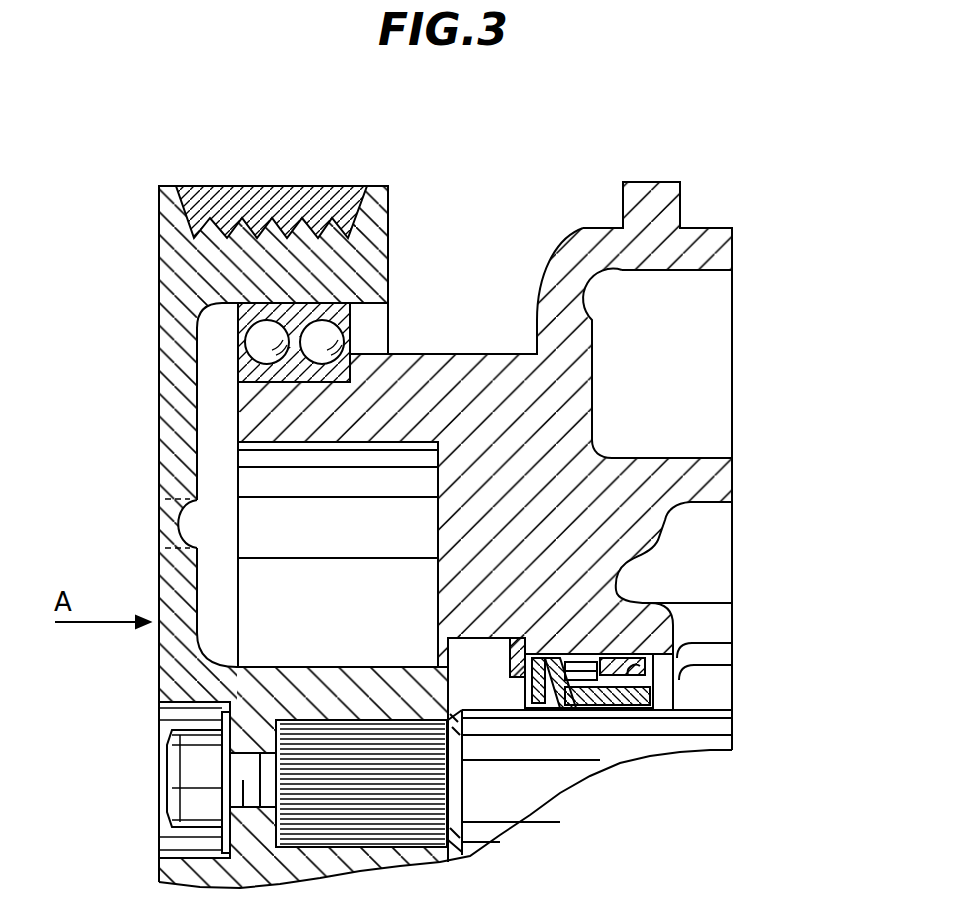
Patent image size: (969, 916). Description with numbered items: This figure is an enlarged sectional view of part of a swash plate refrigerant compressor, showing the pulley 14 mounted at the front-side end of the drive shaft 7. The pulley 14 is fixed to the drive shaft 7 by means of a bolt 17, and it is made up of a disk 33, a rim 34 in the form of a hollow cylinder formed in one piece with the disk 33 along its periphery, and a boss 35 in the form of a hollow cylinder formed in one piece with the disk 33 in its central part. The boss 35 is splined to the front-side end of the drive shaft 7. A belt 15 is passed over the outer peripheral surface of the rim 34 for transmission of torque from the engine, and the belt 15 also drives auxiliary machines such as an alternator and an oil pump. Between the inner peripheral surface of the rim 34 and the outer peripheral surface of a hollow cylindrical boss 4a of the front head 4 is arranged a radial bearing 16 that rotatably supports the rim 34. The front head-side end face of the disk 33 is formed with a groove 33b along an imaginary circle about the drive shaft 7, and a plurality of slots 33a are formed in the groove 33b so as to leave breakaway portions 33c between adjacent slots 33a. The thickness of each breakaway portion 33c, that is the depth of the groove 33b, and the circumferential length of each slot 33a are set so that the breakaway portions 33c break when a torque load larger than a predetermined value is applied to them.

The front head 4 is at (710, 245).
The boss 4a is at (427, 362).
The drive shaft 7 is at (545, 756).
The pulley 14 is at (157, 194).
The belt 15 is at (268, 188).
The radial bearing 16 is at (262, 335).
The bolt 17 is at (183, 773).
The disk 33 is at (167, 448).
The slots 33a is at (158, 534).
The groove 33b is at (178, 510).
The breakaway portions 33c is at (165, 518).
The rim 34 is at (375, 233).
The boss 35 is at (340, 693).